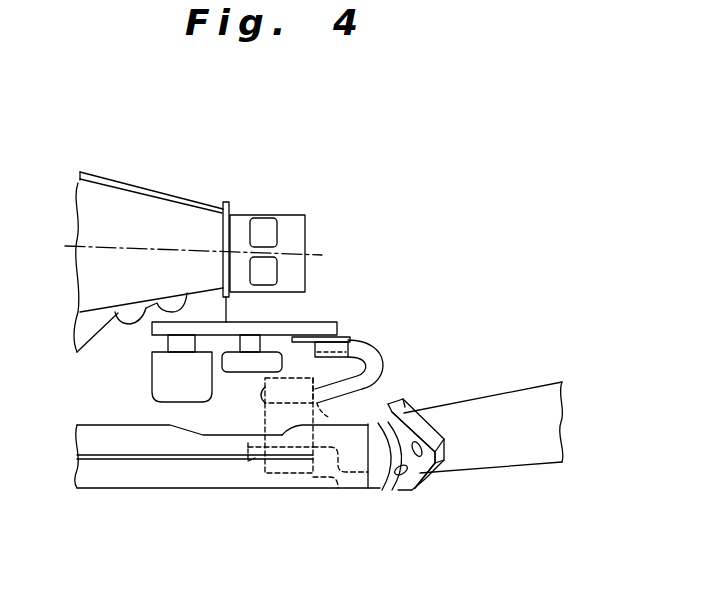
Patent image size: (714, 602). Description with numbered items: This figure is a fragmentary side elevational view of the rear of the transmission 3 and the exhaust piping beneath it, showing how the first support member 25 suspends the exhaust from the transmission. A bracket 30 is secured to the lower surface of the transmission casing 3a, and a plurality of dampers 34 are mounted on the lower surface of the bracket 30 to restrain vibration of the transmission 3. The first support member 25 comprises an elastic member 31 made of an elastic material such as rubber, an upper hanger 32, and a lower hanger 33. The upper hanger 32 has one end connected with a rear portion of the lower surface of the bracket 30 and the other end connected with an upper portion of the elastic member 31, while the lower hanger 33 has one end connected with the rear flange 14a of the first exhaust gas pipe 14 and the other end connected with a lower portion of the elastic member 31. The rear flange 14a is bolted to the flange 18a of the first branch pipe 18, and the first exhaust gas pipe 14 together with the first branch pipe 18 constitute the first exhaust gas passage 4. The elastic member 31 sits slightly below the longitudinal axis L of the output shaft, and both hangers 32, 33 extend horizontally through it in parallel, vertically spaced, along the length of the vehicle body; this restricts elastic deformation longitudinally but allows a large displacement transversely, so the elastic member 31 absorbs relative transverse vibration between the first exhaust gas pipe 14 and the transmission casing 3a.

The transmission 3 is at (185, 192).
The transmission casing 3a is at (212, 203).
The longitudinal axis of the output shaft L is at (322, 255).
The first support member 25 is at (400, 323).
The bracket 30 is at (322, 323).
The dampers 34 is at (198, 385).
The upper hanger 32 is at (365, 352).
The lower hanger 33 is at (311, 489).
The elastic member 31 is at (313, 410).
The first exhaust gas pipe 14 is at (157, 476).
The first exhaust gas passage 4 is at (228, 497).
The rear flange 14a is at (413, 497).
The flange 18a is at (418, 492).
The first branch pipe 18 is at (476, 451).